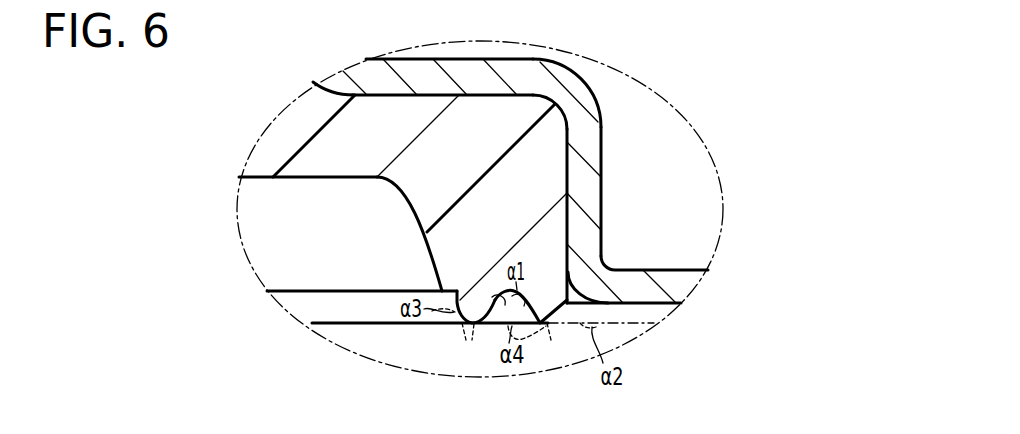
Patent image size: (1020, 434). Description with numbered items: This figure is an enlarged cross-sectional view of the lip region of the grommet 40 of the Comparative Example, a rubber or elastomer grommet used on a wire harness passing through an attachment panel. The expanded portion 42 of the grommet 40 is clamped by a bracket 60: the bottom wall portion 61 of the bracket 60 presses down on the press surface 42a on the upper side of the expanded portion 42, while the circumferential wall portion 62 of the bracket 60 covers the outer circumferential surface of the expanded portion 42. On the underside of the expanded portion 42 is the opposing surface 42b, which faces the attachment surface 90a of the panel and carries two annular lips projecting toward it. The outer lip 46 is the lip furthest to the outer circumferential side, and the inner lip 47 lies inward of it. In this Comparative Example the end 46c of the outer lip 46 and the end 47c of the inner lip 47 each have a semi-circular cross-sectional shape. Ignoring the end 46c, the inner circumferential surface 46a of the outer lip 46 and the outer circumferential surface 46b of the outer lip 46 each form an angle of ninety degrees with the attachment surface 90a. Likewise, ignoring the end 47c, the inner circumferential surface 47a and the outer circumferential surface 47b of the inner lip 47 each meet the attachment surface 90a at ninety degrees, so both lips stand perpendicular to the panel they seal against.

The grommet 40 is at (439, 206).
The expanded portion 42 is at (419, 206).
The press surface 42a is at (480, 93).
The opposing surface 42b is at (258, 178).
The outer lip 46 is at (581, 320).
The inner circumferential surface of outer lip 46a is at (533, 290).
The outer circumferential surface of outer lip 46b is at (604, 256).
The end of outer lip 46c is at (552, 326).
The inner lip 47 is at (449, 320).
The inner circumferential surface of inner lip 47a is at (447, 289).
The outer circumferential surface of inner lip 47b is at (499, 292).
The end of inner lip 47c is at (476, 326).
The bracket 60 is at (510, 155).
The bottom wall portion 61 is at (405, 58).
The circumferential wall portion 62 is at (602, 194).
The attachment surface 90a is at (650, 327).